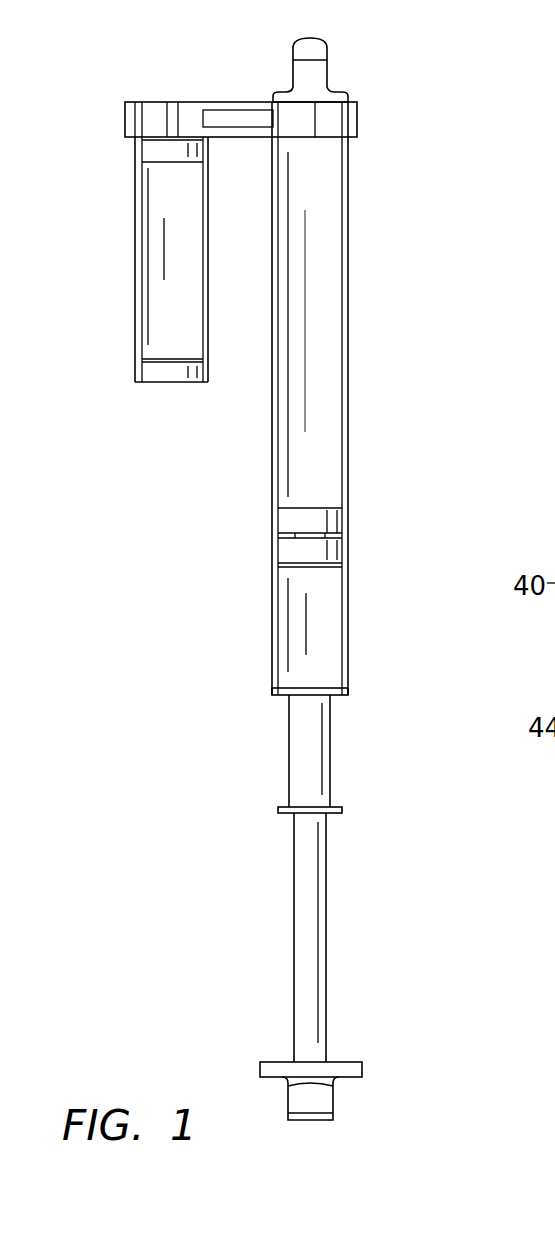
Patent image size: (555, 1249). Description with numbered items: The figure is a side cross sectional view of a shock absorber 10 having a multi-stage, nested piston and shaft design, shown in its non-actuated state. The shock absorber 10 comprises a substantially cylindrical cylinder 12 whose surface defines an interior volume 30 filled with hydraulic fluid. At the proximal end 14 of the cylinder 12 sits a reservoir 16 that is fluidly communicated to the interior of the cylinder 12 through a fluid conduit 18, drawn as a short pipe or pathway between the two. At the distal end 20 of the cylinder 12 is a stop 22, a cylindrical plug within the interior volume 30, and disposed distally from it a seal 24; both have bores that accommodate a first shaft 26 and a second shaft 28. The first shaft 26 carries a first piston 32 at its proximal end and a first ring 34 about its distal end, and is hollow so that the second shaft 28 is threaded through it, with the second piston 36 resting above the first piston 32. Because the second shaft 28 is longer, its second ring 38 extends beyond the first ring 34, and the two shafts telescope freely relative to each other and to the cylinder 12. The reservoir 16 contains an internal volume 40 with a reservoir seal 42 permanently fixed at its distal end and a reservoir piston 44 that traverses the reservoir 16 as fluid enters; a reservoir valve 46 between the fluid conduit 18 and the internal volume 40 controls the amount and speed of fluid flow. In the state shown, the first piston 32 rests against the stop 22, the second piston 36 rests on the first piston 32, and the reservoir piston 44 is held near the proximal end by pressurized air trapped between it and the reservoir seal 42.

The shock absorber 10 is at (450, 195).
The cylinder 12 is at (350, 405).
The proximal end 14 is at (370, 58).
The reservoir 16 is at (150, 217).
The fluid conduit 18 is at (235, 115).
The distal end 20 is at (387, 565).
The stop 22 is at (298, 647).
The seal 24 is at (272, 697).
The first shaft 26 is at (313, 738).
The second shaft 28 is at (312, 905).
The interior volume 30 is at (315, 297).
The first piston 32 is at (330, 552).
The first ring 34 is at (342, 810).
The second piston 36 is at (323, 523).
The second ring 38 is at (268, 1062).
The internal volume 40 is at (165, 292).
The reservoir seal 42 is at (172, 372).
The reservoir piston 44 is at (147, 146).
The reservoir valve 46 is at (162, 112).